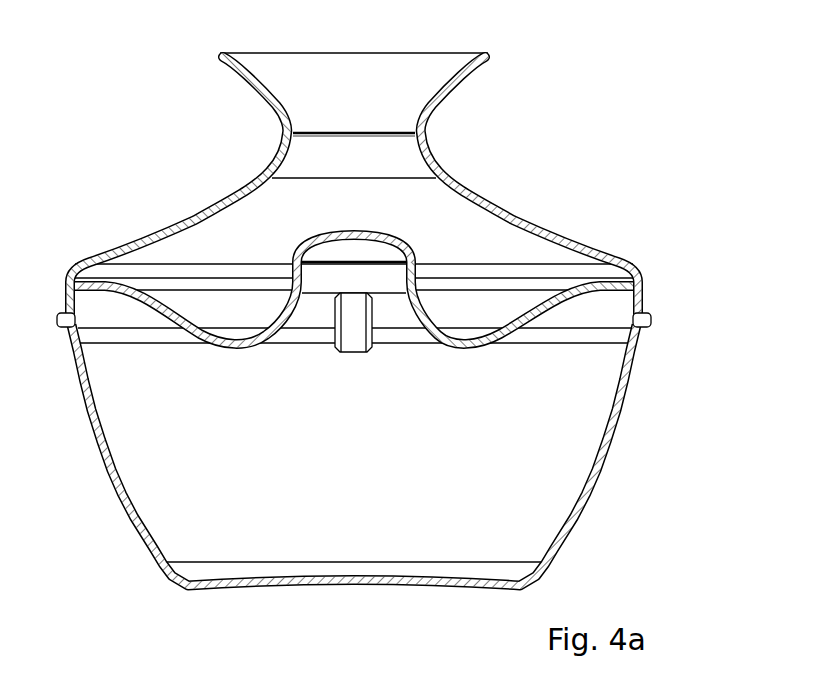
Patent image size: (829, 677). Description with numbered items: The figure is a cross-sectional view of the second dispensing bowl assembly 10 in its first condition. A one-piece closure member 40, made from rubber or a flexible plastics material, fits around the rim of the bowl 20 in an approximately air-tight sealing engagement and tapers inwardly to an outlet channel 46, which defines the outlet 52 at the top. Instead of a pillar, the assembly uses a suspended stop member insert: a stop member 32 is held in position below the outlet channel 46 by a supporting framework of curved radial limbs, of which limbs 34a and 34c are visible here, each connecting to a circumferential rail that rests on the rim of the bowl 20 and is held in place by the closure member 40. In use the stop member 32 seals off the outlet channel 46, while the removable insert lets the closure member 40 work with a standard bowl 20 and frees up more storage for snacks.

The dispensing bowl assembly 10 is at (602, 70).
The bowl 20 is at (627, 403).
The stop member 32 is at (297, 238).
The curved radial limb 34a is at (163, 312).
The curved radial limb 34c is at (545, 310).
The closure member 40 is at (160, 208).
The outlet channel 46 is at (368, 93).
The outlet 52 is at (398, 70).